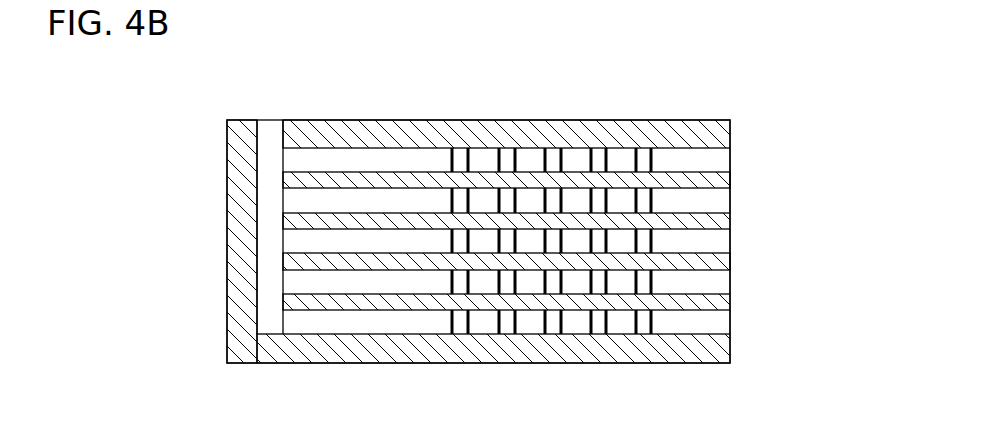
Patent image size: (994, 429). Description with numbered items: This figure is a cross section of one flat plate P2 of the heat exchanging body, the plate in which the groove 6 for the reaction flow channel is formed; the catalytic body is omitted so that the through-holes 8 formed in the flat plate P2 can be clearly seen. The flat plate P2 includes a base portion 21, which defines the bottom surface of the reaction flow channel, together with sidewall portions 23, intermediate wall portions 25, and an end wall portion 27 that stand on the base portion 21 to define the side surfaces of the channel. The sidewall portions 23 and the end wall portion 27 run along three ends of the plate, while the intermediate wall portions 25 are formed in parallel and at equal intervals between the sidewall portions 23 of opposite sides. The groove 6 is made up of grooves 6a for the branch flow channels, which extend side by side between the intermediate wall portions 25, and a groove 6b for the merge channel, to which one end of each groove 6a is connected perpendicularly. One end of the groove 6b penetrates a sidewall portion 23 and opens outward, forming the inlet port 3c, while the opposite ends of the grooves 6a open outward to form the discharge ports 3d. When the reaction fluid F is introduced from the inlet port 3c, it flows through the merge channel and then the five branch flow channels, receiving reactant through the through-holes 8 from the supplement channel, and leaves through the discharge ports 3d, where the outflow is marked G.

The base portion 21 is at (702, 337).
The end wall portion 27 is at (228, 156).
The sidewall portions 23 is at (440, 120).
The inlet port 3c is at (258, 119).
The reaction fluid F is at (270, 117).
The intermediate wall portions 25 is at (335, 296).
The through-holes 8 is at (638, 149).
The groove 6 is at (160, 195).
The grooves for branch flow channels 6a is at (292, 282).
The groove for merge channel 6b is at (265, 319).
The discharge ports 3d is at (732, 172).
The fluid outflow G is at (737, 160).
The flat plate P2 is at (744, 135).